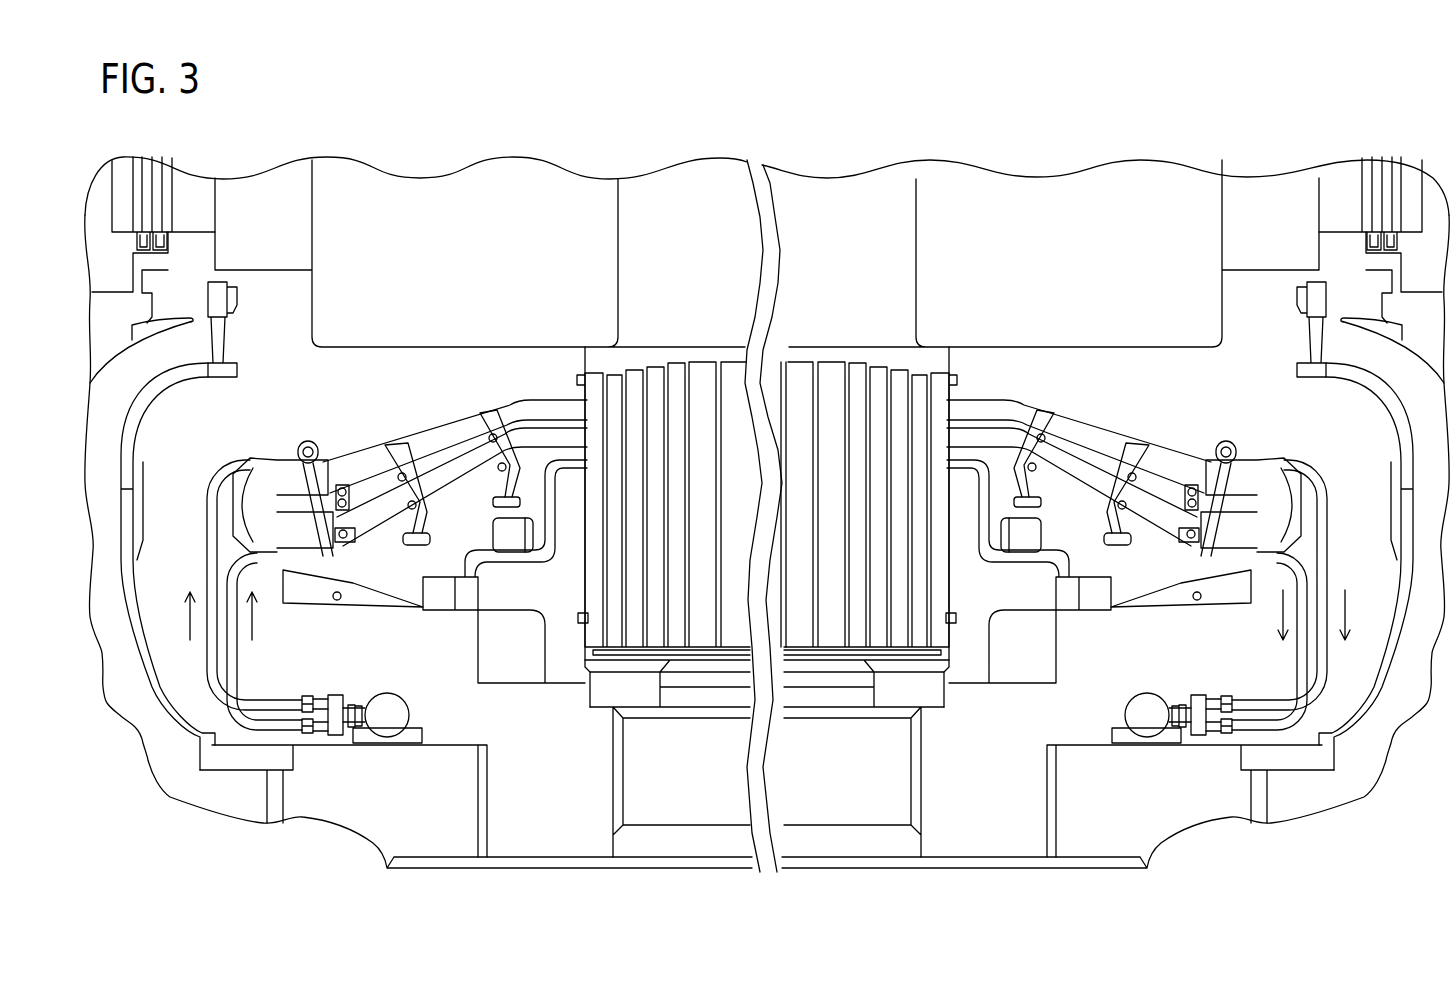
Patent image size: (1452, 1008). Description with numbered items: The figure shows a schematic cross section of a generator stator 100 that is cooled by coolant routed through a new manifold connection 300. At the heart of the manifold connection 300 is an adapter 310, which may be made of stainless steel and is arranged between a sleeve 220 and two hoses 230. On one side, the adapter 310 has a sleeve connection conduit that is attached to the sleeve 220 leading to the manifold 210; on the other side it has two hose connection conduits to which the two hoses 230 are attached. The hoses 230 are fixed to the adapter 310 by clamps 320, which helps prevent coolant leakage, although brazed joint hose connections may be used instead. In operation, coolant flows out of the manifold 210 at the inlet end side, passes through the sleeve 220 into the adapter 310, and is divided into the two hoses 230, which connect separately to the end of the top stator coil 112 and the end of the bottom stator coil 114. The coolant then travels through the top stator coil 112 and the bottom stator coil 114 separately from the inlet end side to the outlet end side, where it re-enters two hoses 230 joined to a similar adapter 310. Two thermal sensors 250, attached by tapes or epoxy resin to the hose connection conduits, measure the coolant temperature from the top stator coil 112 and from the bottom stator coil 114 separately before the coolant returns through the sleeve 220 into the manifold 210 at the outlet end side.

The generator stator 100 is at (1137, 117).
The top stator coil 112 is at (360, 447).
The bottom stator coil 114 is at (452, 462).
The manifold 210 is at (410, 710).
The sleeve 220 is at (357, 705).
The hoses 230 is at (228, 586).
The thermal sensors 250 is at (1213, 695).
The manifold connection 300 is at (337, 737).
The adapter 310 is at (337, 695).
The clamps 320 is at (306, 695).